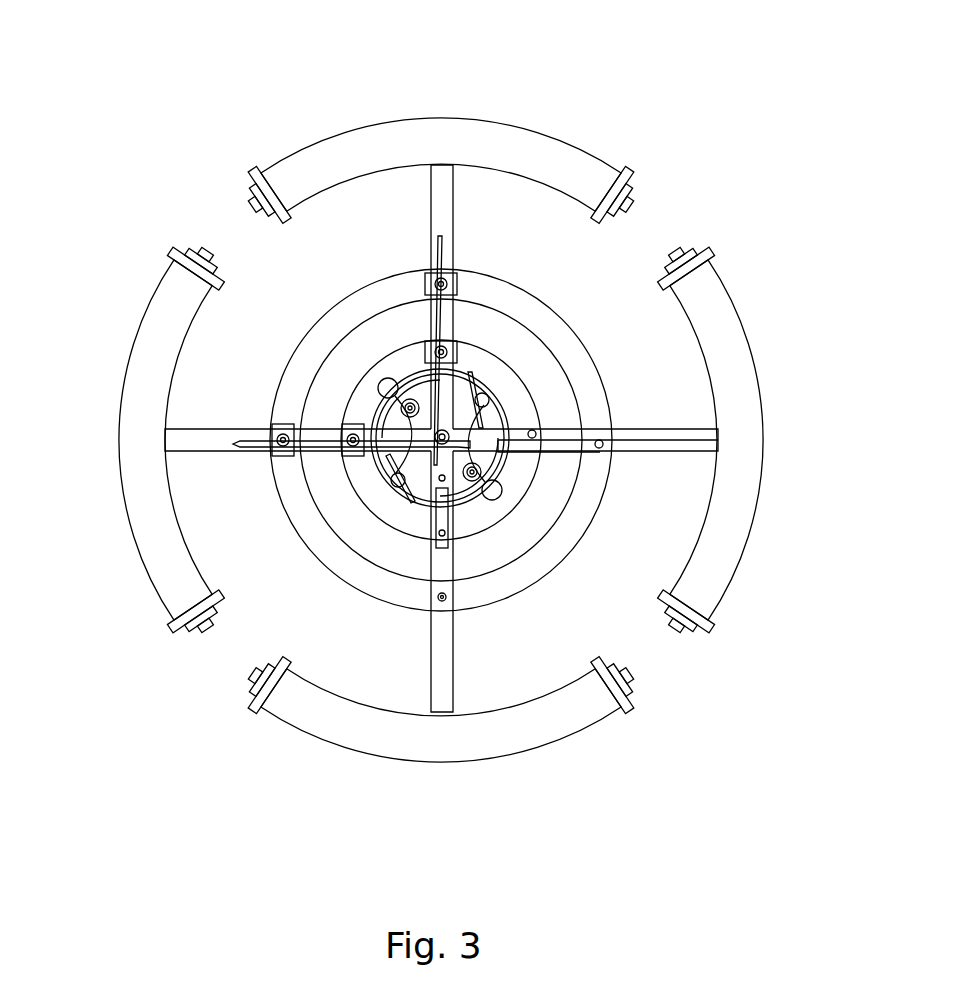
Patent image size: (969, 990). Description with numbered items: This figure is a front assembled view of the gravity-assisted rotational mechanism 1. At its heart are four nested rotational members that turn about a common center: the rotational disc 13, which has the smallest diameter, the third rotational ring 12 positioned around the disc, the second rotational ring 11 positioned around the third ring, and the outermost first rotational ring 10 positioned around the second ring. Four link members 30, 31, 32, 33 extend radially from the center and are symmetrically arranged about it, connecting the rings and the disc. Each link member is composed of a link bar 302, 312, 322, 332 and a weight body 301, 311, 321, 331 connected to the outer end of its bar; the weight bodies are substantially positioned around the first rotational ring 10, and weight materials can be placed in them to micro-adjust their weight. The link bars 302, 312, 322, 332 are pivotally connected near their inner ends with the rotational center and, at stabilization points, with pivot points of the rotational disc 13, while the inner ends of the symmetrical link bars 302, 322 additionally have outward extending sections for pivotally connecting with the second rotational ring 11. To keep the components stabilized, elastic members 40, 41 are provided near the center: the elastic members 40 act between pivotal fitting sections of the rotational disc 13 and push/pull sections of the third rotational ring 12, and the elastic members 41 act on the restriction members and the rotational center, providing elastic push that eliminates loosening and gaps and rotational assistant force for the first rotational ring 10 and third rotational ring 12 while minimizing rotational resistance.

The gravity-assisted rotational mechanism 1 is at (243, 100).
The first rotational ring 10 is at (318, 545).
The second rotational ring 11 is at (400, 520).
The third rotational ring 12 is at (500, 465).
The rotational disc 13 is at (490, 420).
The link member 30 is at (101, 440).
The weight body 301 is at (140, 528).
The link bar 302 is at (206, 436).
The link member 31 is at (457, 99).
The weight body 311 is at (386, 120).
The link bar 312 is at (438, 205).
The link member 32 is at (775, 433).
The weight body 321 is at (742, 533).
The link bar 322 is at (675, 445).
The link member 33 is at (448, 778).
The weight body 331 is at (528, 732).
The link bar 332 is at (447, 652).
The elastic member 40 is at (460, 363).
The elastic member 41 is at (423, 315).